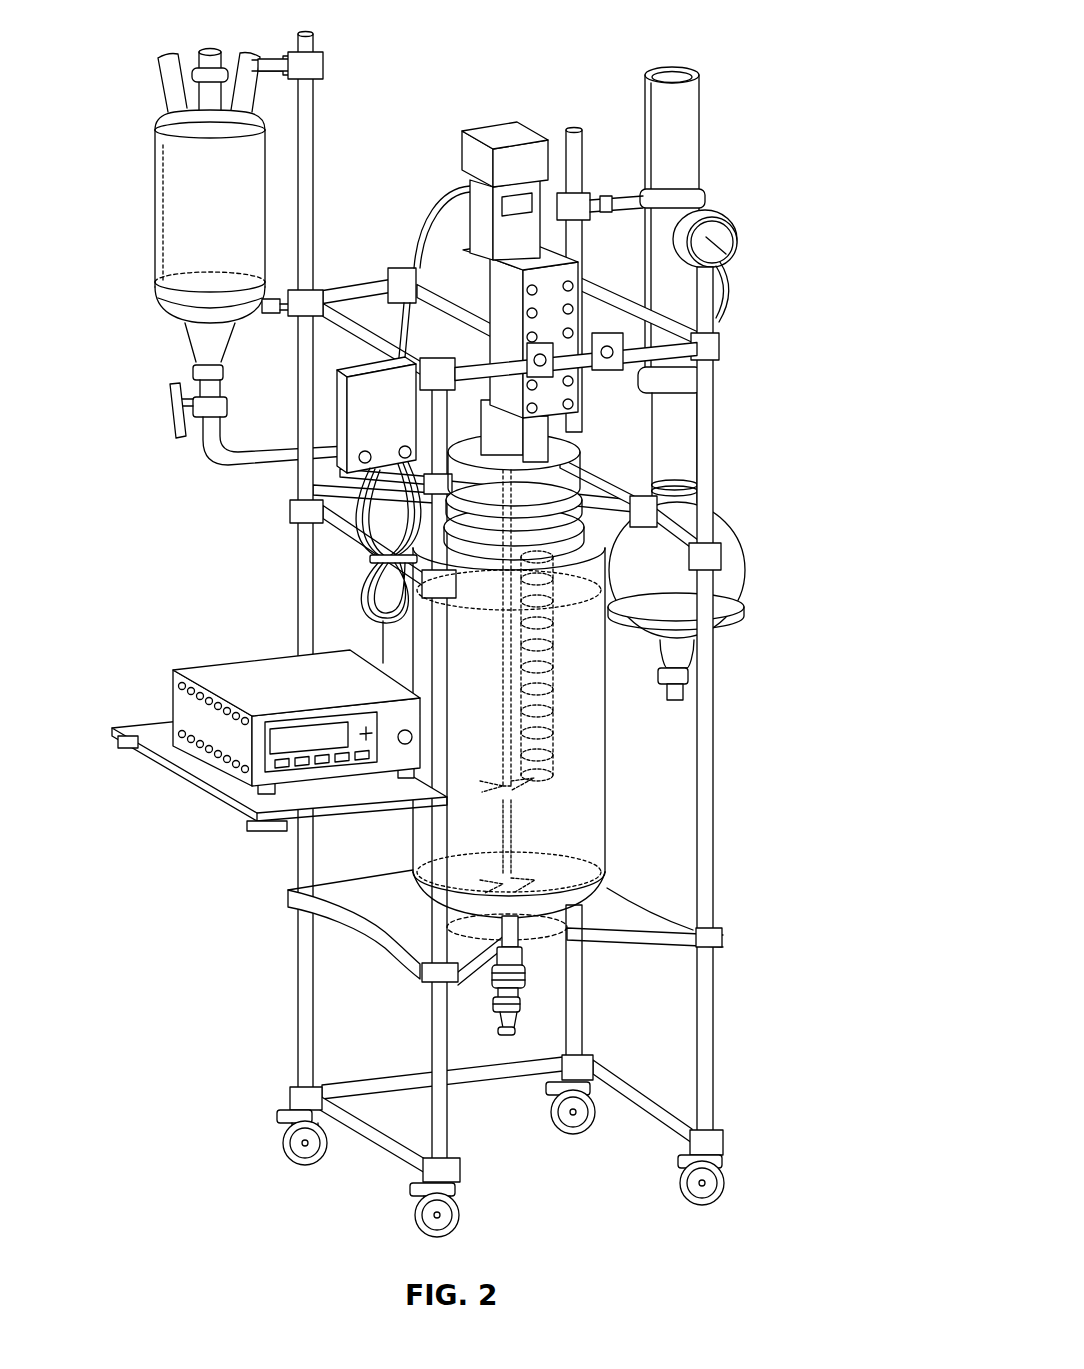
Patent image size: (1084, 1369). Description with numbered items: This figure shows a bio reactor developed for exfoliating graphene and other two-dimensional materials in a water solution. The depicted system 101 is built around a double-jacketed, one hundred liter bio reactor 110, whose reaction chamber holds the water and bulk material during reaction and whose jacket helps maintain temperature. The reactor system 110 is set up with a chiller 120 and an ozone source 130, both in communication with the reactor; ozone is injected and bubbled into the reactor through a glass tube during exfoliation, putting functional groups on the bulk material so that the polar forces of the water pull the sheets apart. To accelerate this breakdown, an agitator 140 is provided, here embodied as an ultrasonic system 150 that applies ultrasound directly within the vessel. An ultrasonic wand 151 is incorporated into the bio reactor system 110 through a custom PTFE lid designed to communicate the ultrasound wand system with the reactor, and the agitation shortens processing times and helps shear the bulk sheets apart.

The system 101 is at (796, 716).
The reactor 110 is at (604, 836).
The chiller 120 is at (336, 420).
The ozone source 130 is at (725, 290).
The agitator 140 is at (233, 675).
The ultrasonic system 150 is at (583, 410).
The ultrasonic wand 151 is at (557, 756).